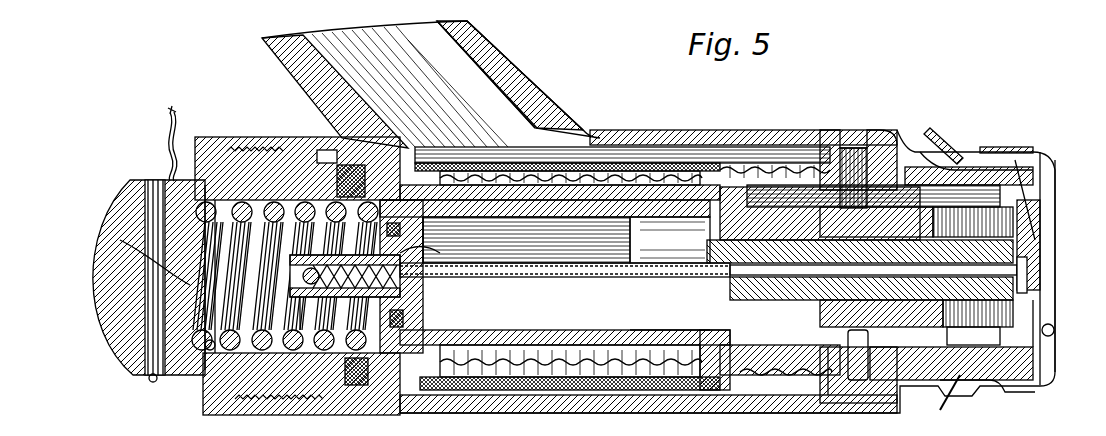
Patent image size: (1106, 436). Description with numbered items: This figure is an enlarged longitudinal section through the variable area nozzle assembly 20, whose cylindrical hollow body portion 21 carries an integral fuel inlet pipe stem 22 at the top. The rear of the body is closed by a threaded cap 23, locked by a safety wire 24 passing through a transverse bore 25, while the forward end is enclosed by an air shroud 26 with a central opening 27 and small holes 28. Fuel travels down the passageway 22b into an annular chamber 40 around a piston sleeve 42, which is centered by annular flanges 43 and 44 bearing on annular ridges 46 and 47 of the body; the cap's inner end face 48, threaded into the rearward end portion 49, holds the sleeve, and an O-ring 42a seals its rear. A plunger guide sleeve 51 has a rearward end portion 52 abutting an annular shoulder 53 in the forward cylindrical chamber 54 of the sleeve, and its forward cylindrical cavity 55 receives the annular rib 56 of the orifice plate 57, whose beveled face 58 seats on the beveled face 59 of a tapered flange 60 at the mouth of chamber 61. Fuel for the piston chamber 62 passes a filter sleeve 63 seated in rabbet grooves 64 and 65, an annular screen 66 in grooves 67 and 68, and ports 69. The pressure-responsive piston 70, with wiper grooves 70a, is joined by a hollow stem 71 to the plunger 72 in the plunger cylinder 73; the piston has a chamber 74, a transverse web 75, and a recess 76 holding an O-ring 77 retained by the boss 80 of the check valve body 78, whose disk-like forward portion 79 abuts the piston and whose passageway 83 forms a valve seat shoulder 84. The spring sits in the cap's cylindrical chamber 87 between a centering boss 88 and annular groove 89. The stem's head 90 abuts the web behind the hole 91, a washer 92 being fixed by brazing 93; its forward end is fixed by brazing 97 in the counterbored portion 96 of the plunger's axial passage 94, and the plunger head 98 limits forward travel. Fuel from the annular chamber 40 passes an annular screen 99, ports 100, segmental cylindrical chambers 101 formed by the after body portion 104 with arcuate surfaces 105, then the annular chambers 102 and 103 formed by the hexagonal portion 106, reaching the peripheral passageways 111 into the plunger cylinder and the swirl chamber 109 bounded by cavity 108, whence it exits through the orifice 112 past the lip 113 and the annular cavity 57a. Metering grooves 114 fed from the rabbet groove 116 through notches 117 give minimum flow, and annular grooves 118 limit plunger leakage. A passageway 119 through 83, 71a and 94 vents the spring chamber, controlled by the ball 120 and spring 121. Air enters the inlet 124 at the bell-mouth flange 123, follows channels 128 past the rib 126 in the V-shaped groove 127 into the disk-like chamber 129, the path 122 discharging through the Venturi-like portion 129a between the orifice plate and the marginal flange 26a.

The variable area nozzle assembly 20 is at (634, 99).
The body portion 21 is at (712, 132).
The fuel inlet pipe stem 22 is at (470, 52).
The passageway 22b is at (505, 80).
The cap 23 is at (205, 300).
The safety wire 24 is at (166, 130).
The transverse bore 25 is at (145, 245).
The air shroud 26 is at (1025, 392).
The marginal flange 26a is at (1052, 170).
The opening 27 is at (1040, 310).
The holes 28 is at (1045, 345).
The annular chamber 40 is at (530, 400).
The piston sleeve 42 is at (735, 165).
The O-ring 42a is at (348, 184).
The annular flange 43 is at (853, 175).
The annular flange 44 is at (378, 178).
The annular ridge 46 is at (836, 150).
The annular ridge 47 is at (432, 150).
The inner end face 48 is at (300, 200).
The threaded rearward end portion 49 is at (270, 300).
The plunger guide sleeve 51 is at (910, 130).
The rearward end portion 52 is at (748, 165).
The annular shoulder 53 is at (735, 375).
The forward cylindrical chamber 54 is at (812, 396).
The cylindrical cavity 55 is at (1040, 150).
The annular rib 56 is at (1018, 175).
The orifice plate 57 is at (1056, 168).
The annular cavity 57a is at (1050, 200).
The beveled face 58 is at (1050, 165).
The beveled face 59 is at (1046, 160).
The tapered flange 60 is at (1048, 362).
The chamber 61 is at (902, 385).
The piston chamber 62 is at (680, 375).
The filter sleeve 63 is at (655, 378).
The annular rabbet groove 64 is at (712, 390).
The annular rabbet groove 65 is at (430, 395).
The annular screen 66 is at (625, 385).
The annular rabbet groove 67 is at (692, 372).
The annular rabbet groove 68 is at (470, 392).
The ports 69 is at (690, 360).
The pressure-responsive piston 70 is at (570, 345).
The wiper grooves 70a is at (612, 180).
The hollow stem 71 is at (560, 278).
The passageway 71a is at (612, 278).
The plunger 72 is at (705, 330).
The plunger cylinder 73 is at (870, 330).
The cylindrical chamber 74 is at (540, 345).
The transverse web 75 is at (440, 315).
The cylindrical recess 76 is at (420, 318).
The O-ring 77 is at (400, 352).
The check valve body 78 is at (340, 297).
The disk-like forward portion 79 is at (366, 300).
The cylindrical boss portion 80 is at (430, 300).
The passageway 83 is at (308, 300).
The valve seat shoulder 84 is at (262, 150).
The cylindrical chamber 87 is at (205, 360).
The centering boss 88 is at (210, 350).
The annular groove 89 is at (200, 200).
The head 90 is at (440, 262).
The hole 91 is at (505, 262).
The washer 92 is at (410, 262).
The welding or brazing 93 is at (470, 300).
The axial passage 94 is at (858, 334).
The counterbored portion 96 is at (690, 345).
The welding or brazing 97 is at (700, 290).
The head 98 is at (700, 345).
The annular screen 99 is at (750, 400).
The ports 100 is at (792, 165).
The segmental cylindrical chambers 101 is at (808, 163).
The annular chamber 102 is at (900, 120).
The annular chamber 103 is at (890, 185).
The after body portion 104 is at (832, 400).
The arcuate surfaces 105 is at (828, 395).
The integral portion 106 is at (925, 165).
The cylindrical cavity 108 is at (1040, 212).
The swirl chamber 109 is at (1040, 250).
The peripheral passageways 111 is at (949, 333).
The orifice 112 is at (1030, 262).
The lip 113 is at (1030, 278).
The metering grooves 114 is at (1030, 292).
The annular rabbet groove 116 is at (1010, 170).
The rectangular notches 117 is at (1040, 234).
The annular grooves 118 is at (775, 376).
The passageway 119 is at (630, 278).
The spherical ball 120 is at (150, 378).
The coil compression spring 121 is at (190, 285).
The air path 122 is at (1045, 392).
The bell-mouth flange 123 is at (955, 400).
The annular inlet 124 is at (950, 130).
The annular rib 126 is at (975, 150).
The V-shaped groove 127 is at (965, 385).
The channels 128 is at (1035, 395).
The disk-like chamber 129 is at (1045, 380).
The Venturi-like discharge passage portion 129a is at (1054, 330).